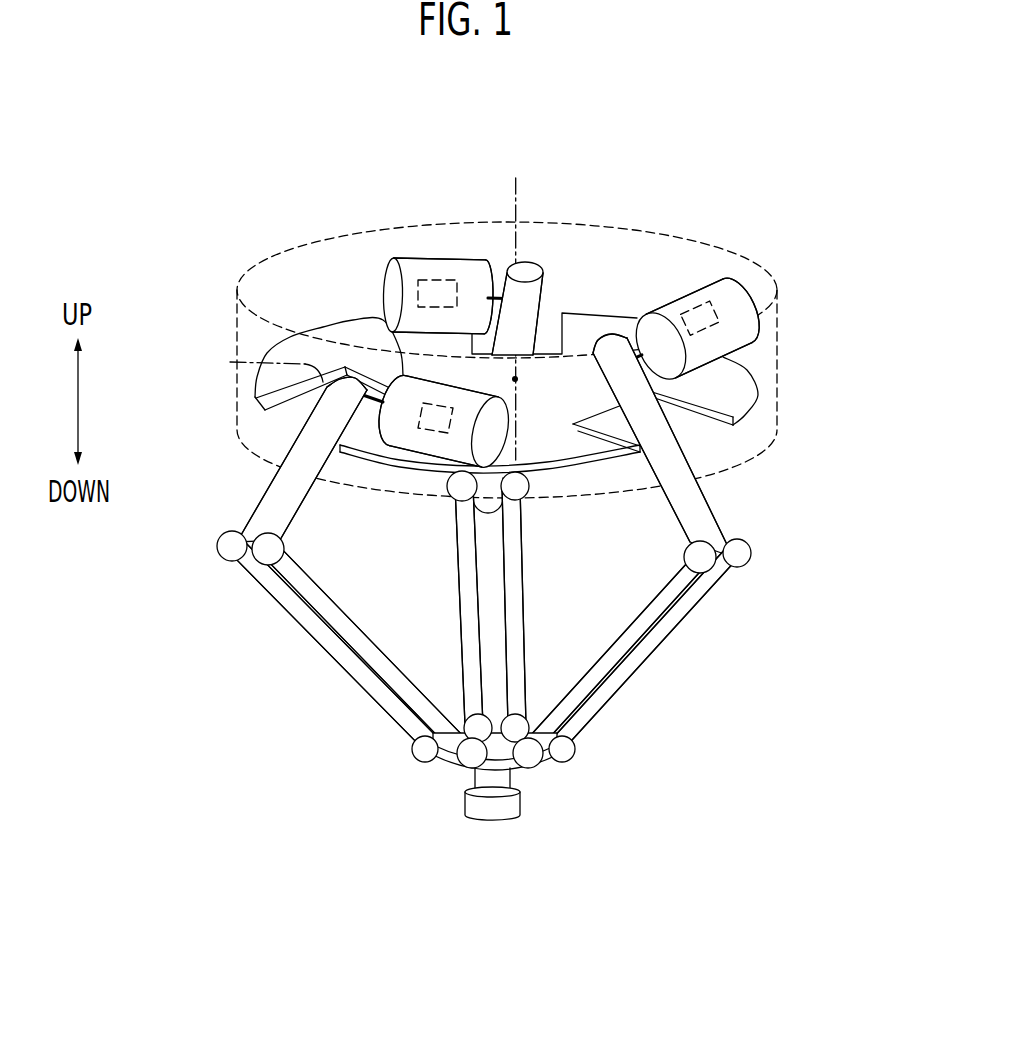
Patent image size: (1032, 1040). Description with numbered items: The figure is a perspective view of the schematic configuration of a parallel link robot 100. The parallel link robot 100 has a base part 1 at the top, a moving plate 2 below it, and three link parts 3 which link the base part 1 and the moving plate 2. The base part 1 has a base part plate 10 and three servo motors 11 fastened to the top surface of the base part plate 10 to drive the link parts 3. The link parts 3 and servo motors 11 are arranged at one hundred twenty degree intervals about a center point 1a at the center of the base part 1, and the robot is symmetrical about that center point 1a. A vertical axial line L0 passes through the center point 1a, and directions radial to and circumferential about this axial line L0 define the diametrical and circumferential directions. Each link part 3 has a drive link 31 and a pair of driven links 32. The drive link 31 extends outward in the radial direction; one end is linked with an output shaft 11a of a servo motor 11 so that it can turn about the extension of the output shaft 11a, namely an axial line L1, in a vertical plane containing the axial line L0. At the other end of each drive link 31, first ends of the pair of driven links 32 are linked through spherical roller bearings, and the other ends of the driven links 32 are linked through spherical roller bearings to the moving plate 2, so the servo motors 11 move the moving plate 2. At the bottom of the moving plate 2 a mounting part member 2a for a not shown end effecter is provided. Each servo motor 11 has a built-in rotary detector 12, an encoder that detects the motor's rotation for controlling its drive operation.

The parallel link robot 100 is at (316, 220).
The base part 1 is at (790, 309).
The base part plate 10 is at (745, 385).
The servo motor 11 is at (450, 272).
The output shaft 11a is at (387, 407).
The rotary detector 12 is at (433, 280).
The center point 1a is at (515, 379).
The moving plate 2 is at (447, 762).
The mounting part member 2a is at (483, 807).
The link part 3 is at (540, 549).
The drive link 31 is at (537, 295).
The driven link 32 is at (462, 565).
The axial line L0 is at (516, 302).
The axial line L1 is at (230, 362).